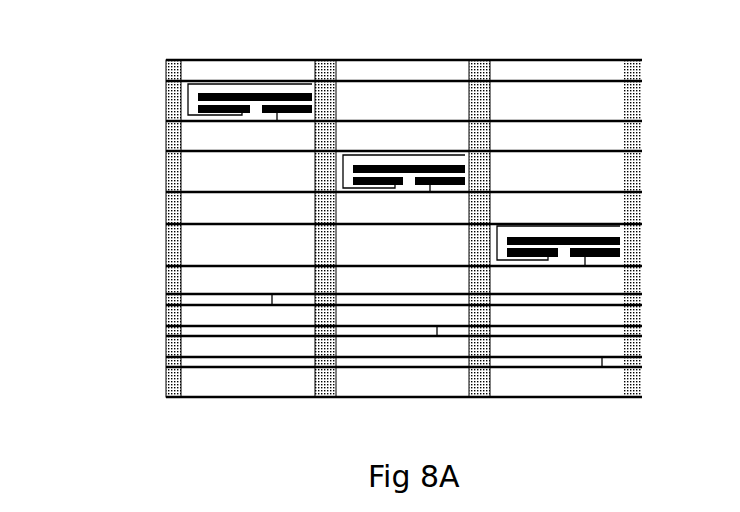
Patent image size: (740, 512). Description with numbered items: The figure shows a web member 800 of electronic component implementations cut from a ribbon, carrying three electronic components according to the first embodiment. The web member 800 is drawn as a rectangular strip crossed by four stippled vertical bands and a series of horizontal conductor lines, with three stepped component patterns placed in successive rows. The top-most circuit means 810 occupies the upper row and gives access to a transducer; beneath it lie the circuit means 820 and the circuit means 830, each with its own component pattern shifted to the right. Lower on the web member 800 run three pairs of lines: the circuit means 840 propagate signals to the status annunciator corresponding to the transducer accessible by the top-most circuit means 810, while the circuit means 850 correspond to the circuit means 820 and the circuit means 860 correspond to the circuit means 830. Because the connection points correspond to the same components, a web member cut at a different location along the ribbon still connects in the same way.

The web member 800 is at (593, 397).
The top-most circuit means 810 is at (168, 113).
The circuit means 820 is at (157, 189).
The circuit means 830 is at (162, 267).
The circuit means 840 is at (162, 302).
The circuit means 850 is at (162, 327).
The circuit means 860 is at (162, 362).